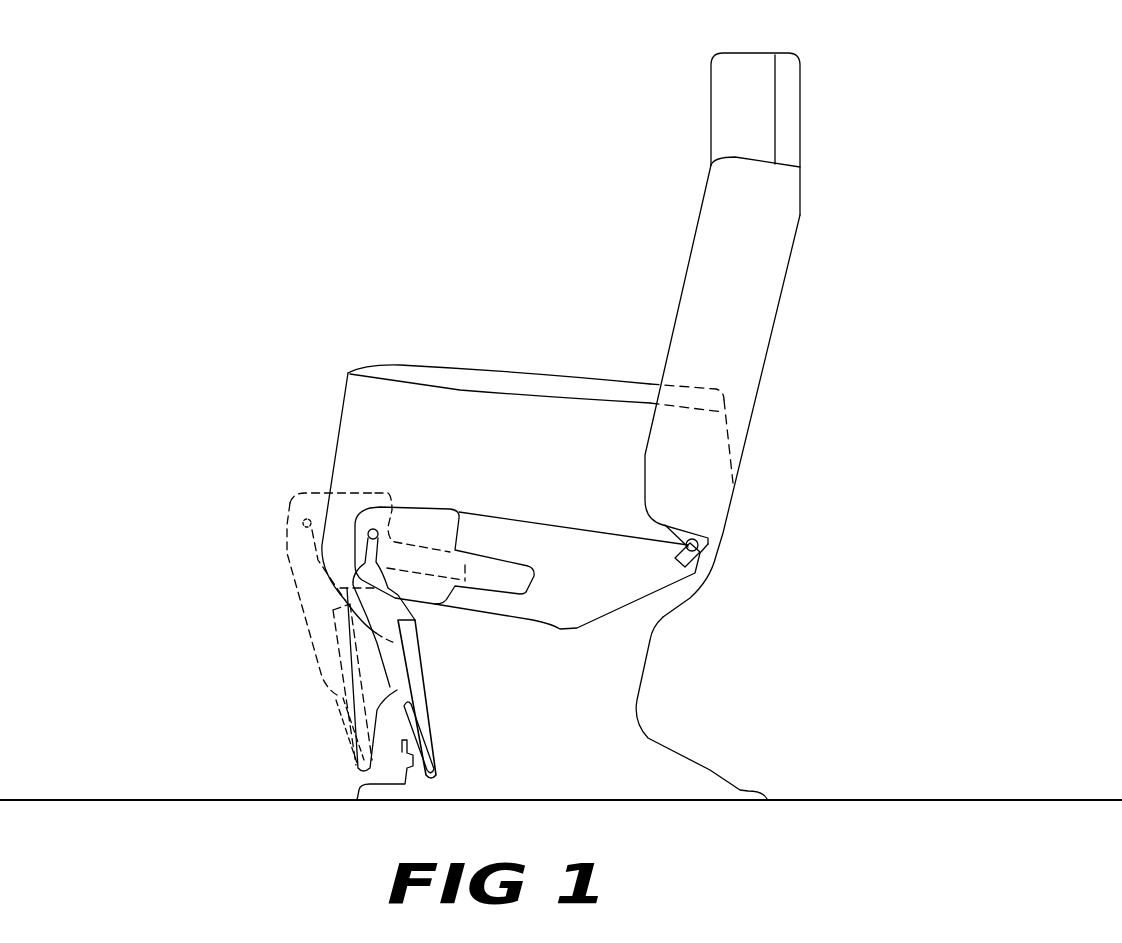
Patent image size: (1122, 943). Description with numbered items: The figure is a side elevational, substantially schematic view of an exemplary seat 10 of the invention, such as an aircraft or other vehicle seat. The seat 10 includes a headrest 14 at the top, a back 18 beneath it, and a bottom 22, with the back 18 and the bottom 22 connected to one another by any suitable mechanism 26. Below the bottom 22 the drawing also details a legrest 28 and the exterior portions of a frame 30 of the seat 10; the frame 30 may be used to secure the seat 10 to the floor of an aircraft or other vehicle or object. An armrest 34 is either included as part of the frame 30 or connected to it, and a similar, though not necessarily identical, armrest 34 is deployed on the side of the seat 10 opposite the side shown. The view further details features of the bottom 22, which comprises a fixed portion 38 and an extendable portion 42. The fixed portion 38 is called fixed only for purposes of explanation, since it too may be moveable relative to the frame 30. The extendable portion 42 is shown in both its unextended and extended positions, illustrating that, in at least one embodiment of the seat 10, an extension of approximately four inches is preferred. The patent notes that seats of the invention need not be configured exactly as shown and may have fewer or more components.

The seat 10 is at (969, 138).
The headrest 14 is at (800, 87).
The back 18 is at (768, 330).
The bottom 22 is at (559, 630).
The mechanism 26 is at (700, 545).
The legrest 28 is at (337, 690).
The frame 30 is at (710, 770).
The armrest 34 is at (392, 372).
The fixed portion 38 is at (493, 512).
The extendable portion 42 is at (412, 508).